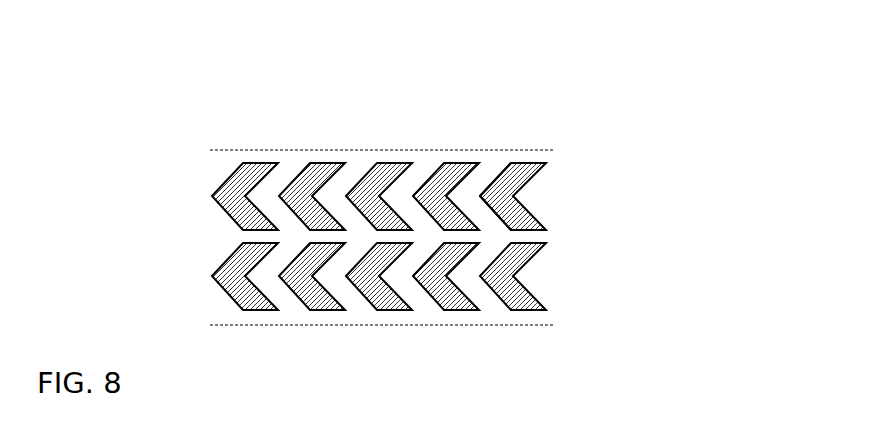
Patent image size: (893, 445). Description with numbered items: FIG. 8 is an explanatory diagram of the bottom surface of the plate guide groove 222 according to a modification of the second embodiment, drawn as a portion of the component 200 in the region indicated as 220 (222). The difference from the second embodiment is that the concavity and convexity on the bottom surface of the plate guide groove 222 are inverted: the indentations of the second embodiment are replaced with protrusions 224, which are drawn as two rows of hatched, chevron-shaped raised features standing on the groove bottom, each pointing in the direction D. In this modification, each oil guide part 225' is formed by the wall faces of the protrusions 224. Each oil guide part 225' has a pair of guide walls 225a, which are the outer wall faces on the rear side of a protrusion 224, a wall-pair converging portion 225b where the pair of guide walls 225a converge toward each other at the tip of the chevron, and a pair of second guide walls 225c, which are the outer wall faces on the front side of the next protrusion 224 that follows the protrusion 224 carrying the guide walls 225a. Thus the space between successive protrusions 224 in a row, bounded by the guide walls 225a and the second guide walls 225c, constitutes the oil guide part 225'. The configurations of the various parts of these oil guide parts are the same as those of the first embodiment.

The conveyor belt 200 is at (665, 142).
The belt layer 220 is at (155, 87).
The plate guide groove 222 is at (121, 51).
The protrusion 224 is at (522, 206).
The oil guide part 225' is at (416, 182).
The guide wall 225a is at (465, 163).
The wall-pair converging portion 225b is at (445, 185).
The second guide wall 225c is at (500, 165).
The conveying direction D is at (613, 368).